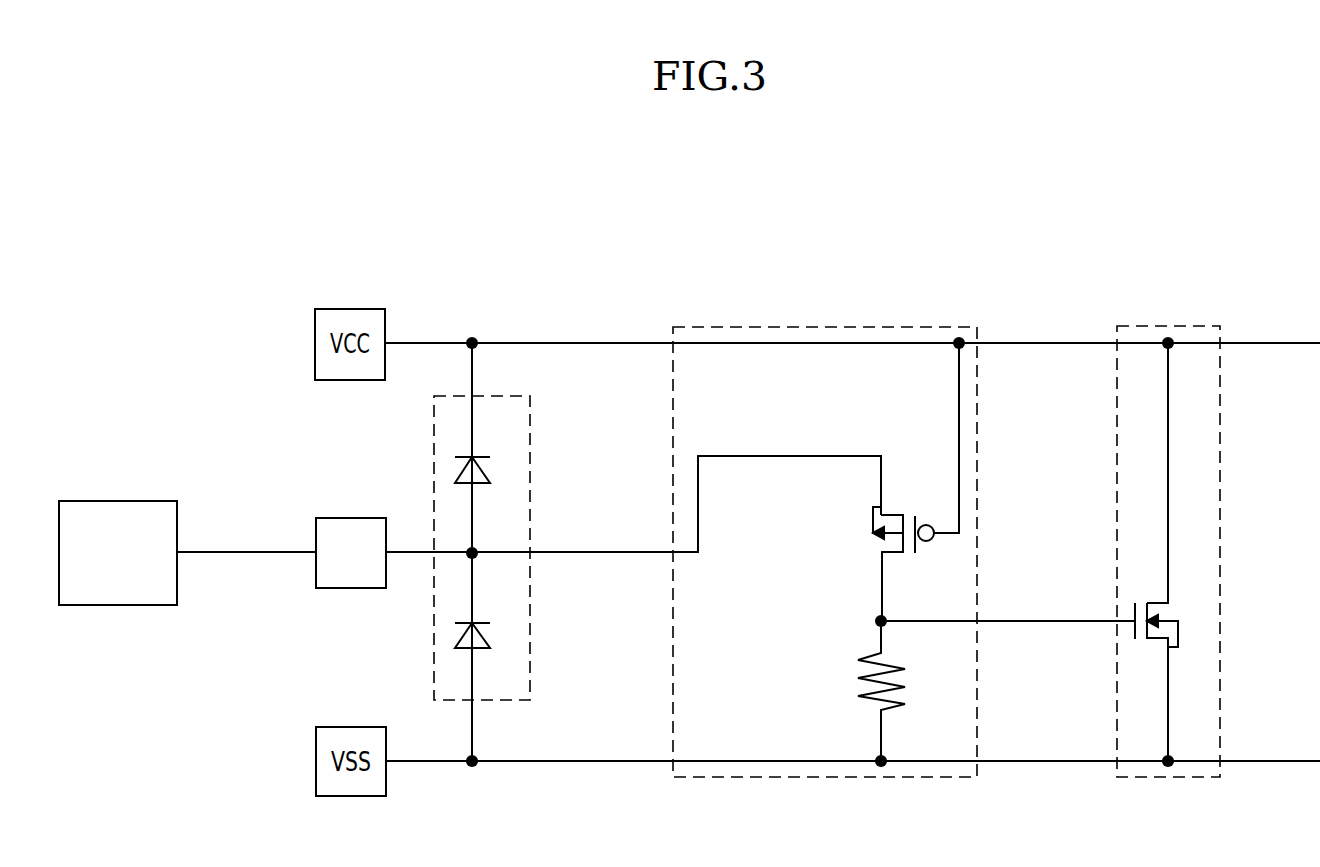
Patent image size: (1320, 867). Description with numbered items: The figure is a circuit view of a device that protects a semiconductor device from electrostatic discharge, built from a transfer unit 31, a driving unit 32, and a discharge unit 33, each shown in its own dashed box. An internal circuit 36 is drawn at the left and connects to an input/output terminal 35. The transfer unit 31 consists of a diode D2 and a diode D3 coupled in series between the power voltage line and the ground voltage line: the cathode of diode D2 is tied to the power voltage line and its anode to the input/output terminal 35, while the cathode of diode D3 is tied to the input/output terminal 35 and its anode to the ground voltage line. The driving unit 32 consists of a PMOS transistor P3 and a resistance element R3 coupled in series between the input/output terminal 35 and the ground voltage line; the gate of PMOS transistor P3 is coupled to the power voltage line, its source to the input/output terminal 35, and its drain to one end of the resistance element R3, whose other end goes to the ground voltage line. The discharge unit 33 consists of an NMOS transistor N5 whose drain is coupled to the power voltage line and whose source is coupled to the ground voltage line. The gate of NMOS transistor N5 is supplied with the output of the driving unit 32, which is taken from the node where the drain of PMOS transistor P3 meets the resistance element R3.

The transfer unit 31 is at (527, 552).
The driving unit 32 is at (825, 510).
The discharge unit 33 is at (1050, 510).
The input/output terminal 35 is at (350, 518).
The internal circuit 36 is at (122, 501).
The diode D2 is at (482, 485).
The diode D3 is at (482, 652).
The PMOS transistor P3 is at (895, 482).
The resistance element R3 is at (865, 691).
The NMOS transistor N5 is at (1029, 552).